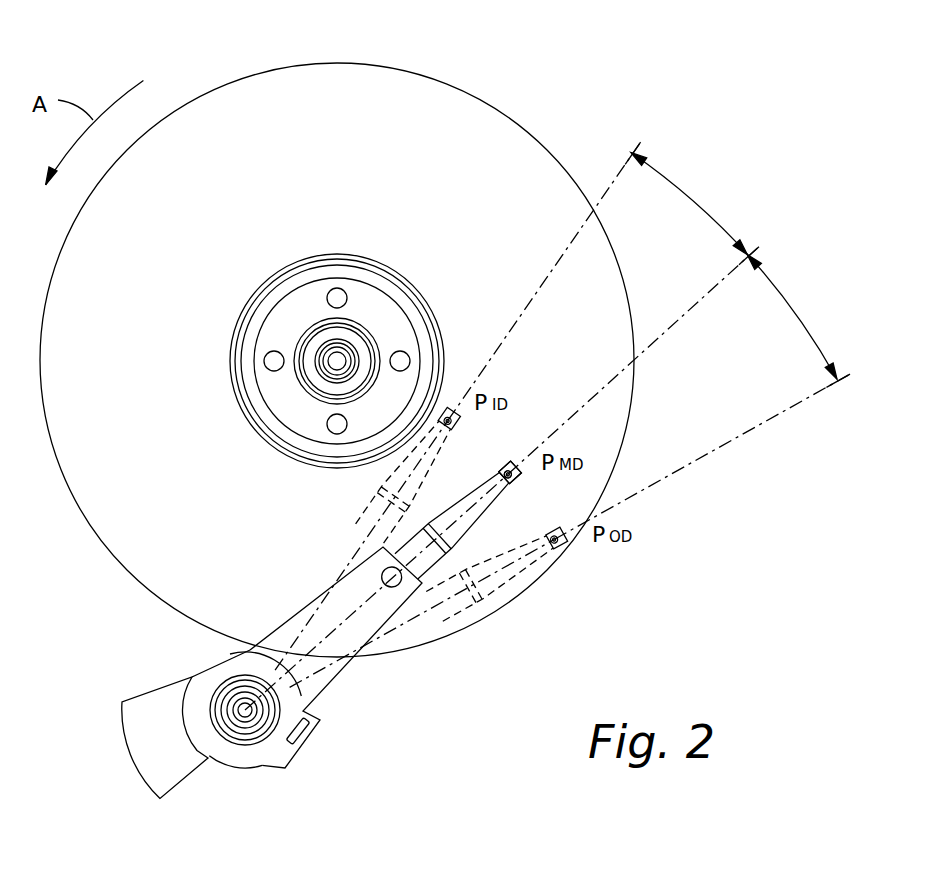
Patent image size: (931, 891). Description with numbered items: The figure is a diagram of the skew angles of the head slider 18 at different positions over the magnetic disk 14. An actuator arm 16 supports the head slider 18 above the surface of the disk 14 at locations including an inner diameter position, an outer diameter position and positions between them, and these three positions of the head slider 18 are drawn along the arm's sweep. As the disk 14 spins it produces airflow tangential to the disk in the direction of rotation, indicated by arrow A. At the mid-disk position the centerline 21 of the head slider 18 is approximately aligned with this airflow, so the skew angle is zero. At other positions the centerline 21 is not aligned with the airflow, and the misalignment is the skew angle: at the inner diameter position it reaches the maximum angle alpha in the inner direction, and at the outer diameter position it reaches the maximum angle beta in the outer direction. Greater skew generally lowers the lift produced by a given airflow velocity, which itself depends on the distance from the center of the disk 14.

The magnetic disk 14 is at (330, 77).
The actuator arm 16 is at (332, 768).
The head slider 18 is at (450, 410).
The centerline 21 is at (673, 318).